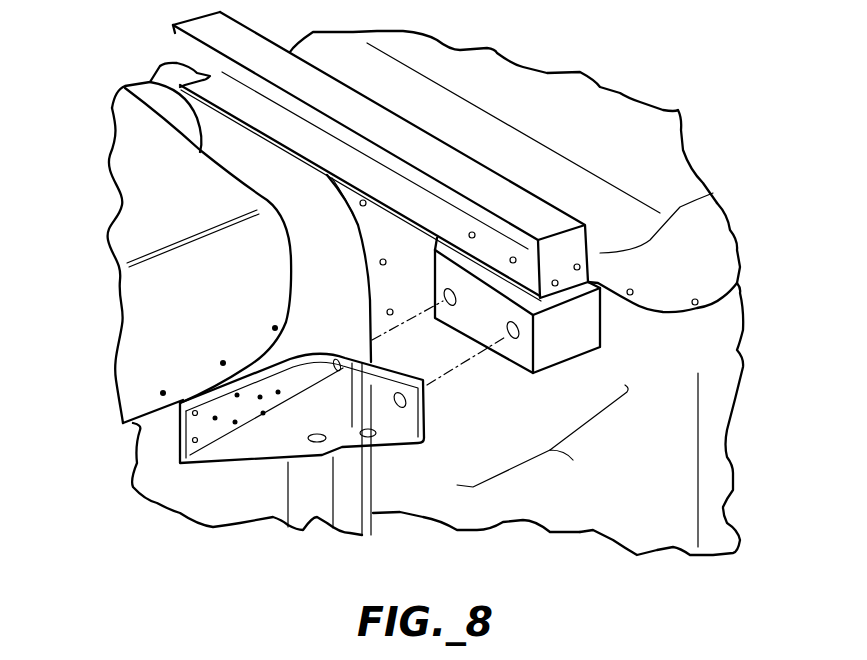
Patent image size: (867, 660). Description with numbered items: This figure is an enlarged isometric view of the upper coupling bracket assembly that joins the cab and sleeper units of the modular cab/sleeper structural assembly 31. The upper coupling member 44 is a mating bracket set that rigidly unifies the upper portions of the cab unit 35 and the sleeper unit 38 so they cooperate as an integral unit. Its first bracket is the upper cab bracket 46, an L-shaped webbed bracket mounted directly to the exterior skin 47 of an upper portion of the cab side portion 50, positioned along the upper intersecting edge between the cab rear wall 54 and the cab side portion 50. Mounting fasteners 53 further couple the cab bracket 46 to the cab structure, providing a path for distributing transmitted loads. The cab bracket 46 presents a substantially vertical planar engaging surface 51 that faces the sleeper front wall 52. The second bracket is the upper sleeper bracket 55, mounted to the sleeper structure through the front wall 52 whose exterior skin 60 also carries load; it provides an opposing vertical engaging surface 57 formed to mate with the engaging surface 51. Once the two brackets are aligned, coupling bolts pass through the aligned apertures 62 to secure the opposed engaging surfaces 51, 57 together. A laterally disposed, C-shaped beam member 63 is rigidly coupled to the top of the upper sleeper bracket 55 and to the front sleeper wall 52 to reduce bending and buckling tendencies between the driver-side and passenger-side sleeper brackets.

The cab/sleeper structural assembly 31 is at (574, 58).
The cab unit 35 is at (134, 186).
The sleeper unit 38 is at (613, 130).
The upper coupling member 44 is at (573, 460).
The upper cab bracket 46 is at (330, 530).
The exterior skin 47 is at (233, 513).
The cab side portion 50 is at (163, 480).
The engaging surface 51 is at (330, 300).
The sleeper front wall 52 is at (420, 231).
The mounting fasteners 53 is at (192, 413).
The cab rear wall 54 is at (147, 80).
The upper sleeper bracket 55 is at (587, 352).
The engaging surface 57 is at (515, 350).
The exterior skin 60 is at (470, 505).
The aligned apertures 62 is at (455, 303).
The beam member 63 is at (592, 253).